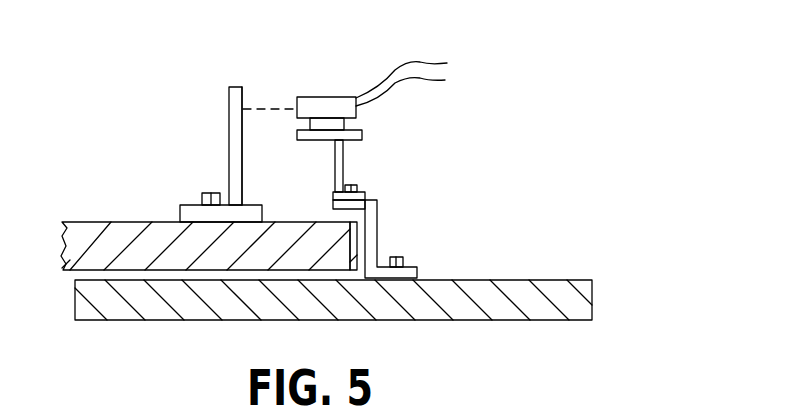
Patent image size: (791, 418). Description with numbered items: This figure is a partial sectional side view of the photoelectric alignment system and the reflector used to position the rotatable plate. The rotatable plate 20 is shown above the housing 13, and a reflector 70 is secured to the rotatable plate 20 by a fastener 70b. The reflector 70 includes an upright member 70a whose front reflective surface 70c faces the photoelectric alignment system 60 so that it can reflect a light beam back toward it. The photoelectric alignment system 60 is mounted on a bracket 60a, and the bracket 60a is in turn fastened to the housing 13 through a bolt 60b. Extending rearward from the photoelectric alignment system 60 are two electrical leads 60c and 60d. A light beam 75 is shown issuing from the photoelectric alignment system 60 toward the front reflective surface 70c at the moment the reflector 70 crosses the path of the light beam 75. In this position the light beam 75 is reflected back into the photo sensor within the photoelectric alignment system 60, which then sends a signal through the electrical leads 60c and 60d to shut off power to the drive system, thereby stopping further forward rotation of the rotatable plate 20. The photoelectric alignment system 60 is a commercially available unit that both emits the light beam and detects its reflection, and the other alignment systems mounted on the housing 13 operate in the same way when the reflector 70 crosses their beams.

The housing 13 is at (588, 304).
The rotatable plate 20 is at (97, 235).
The photoelectric alignment system 60 is at (410, 140).
The bracket 60a is at (380, 202).
The bolt 60b is at (403, 258).
The electrical lead 60c is at (442, 66).
The electrical lead 60d is at (445, 80).
The reflector 70 is at (230, 117).
The upright member 70a is at (230, 87).
The fastener 70b is at (214, 193).
The front reflective surface 70c is at (243, 98).
The light beam 75 is at (273, 110).